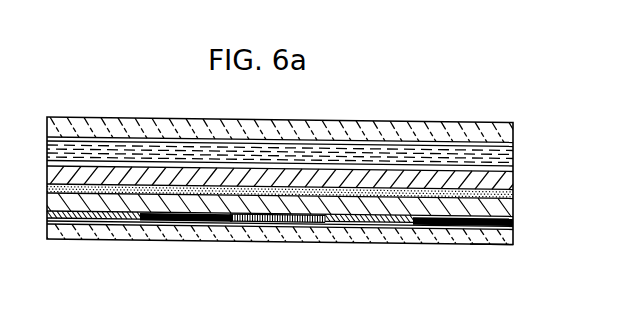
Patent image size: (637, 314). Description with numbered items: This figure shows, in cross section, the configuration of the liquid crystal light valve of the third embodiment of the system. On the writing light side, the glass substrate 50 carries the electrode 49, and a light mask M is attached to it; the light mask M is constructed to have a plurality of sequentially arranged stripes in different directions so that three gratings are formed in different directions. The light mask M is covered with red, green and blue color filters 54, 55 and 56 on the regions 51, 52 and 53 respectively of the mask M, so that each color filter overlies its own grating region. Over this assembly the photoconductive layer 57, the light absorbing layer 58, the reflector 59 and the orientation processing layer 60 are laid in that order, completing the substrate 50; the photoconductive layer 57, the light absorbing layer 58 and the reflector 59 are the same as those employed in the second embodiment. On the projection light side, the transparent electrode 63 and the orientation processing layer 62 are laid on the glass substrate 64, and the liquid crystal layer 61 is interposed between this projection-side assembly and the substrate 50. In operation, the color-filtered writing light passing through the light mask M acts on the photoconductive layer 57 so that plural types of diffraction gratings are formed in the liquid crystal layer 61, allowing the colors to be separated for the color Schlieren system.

The electrode 49 is at (512, 239).
The glass substrate 50 is at (472, 228).
The region of the mask 51 is at (272, 222).
The region of the mask 52 is at (367, 216).
The region of the mask 53 is at (430, 222).
The red color filter 54 is at (300, 217).
The green color filter 55 is at (396, 215).
The blue color filter 56 is at (508, 223).
The photoconductive layer 57 is at (500, 211).
The light absorbing layer 58 is at (512, 192).
The reflector 59 is at (513, 172).
The orientation processing layer 60 is at (472, 172).
The liquid crystal layer 61 is at (449, 156).
The orientation processing layer 62 is at (423, 144).
The transparent electrode 63 is at (384, 139).
The glass substrate 64 is at (335, 131).
The light mask M is at (481, 230).